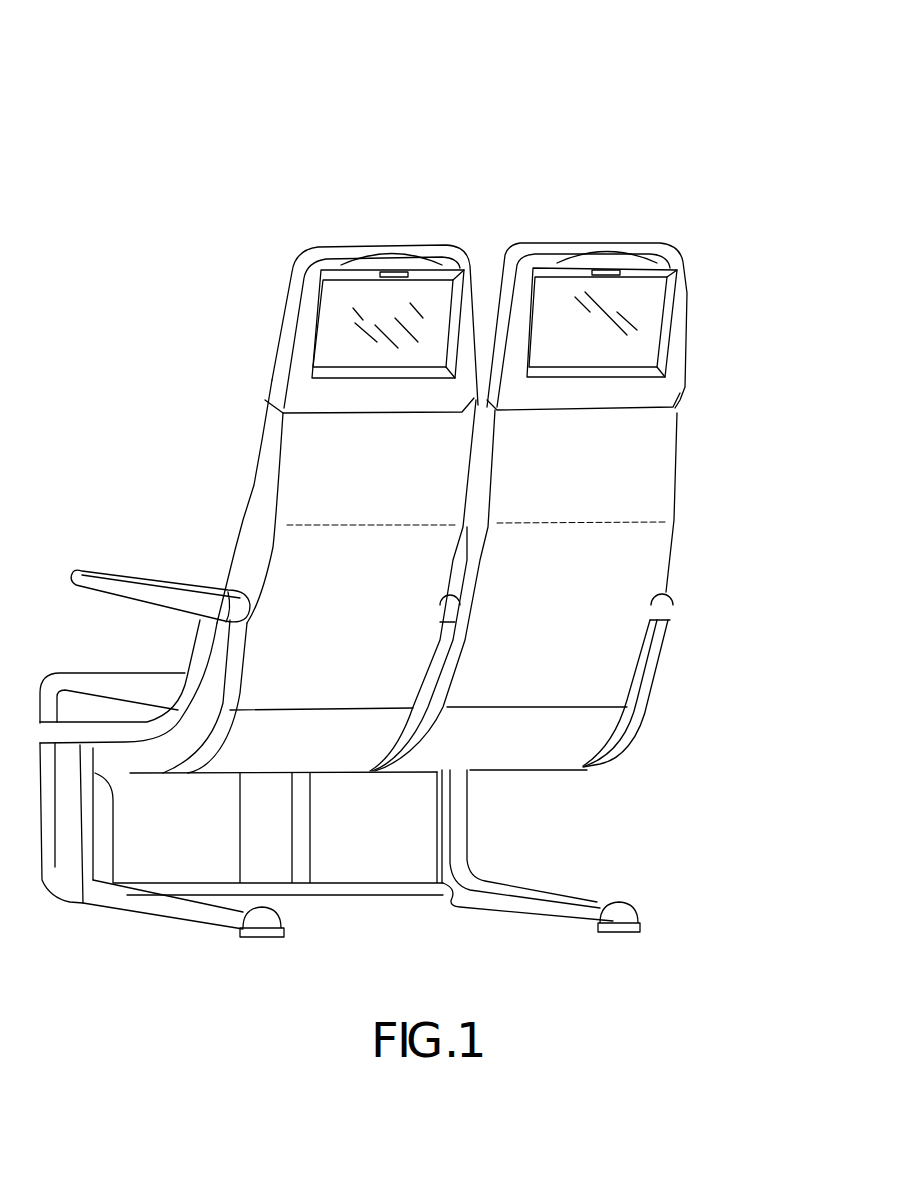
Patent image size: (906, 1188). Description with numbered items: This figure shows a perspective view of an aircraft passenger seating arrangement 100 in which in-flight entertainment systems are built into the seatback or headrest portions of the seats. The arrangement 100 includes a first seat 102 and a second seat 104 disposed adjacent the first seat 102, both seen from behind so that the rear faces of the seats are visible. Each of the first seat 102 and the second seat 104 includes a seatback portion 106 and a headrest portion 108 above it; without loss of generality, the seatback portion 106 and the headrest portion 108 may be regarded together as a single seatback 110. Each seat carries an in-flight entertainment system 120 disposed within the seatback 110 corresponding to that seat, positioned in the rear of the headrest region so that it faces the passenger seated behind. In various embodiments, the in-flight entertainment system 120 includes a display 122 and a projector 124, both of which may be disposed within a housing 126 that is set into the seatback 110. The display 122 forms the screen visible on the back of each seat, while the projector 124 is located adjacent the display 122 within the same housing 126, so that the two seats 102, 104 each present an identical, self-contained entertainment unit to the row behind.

The aircraft passenger seating arrangement 100 is at (224, 147).
The first seat 102 is at (252, 530).
The second seat 104 is at (653, 558).
The seatback portion 106 is at (267, 481).
The headrest portion 108 is at (284, 352).
The seatback 110 is at (243, 418).
The in-flight entertainment system 120 is at (431, 292).
The display 122 is at (357, 362).
The projector 124 is at (396, 277).
The housing 126 is at (383, 258).